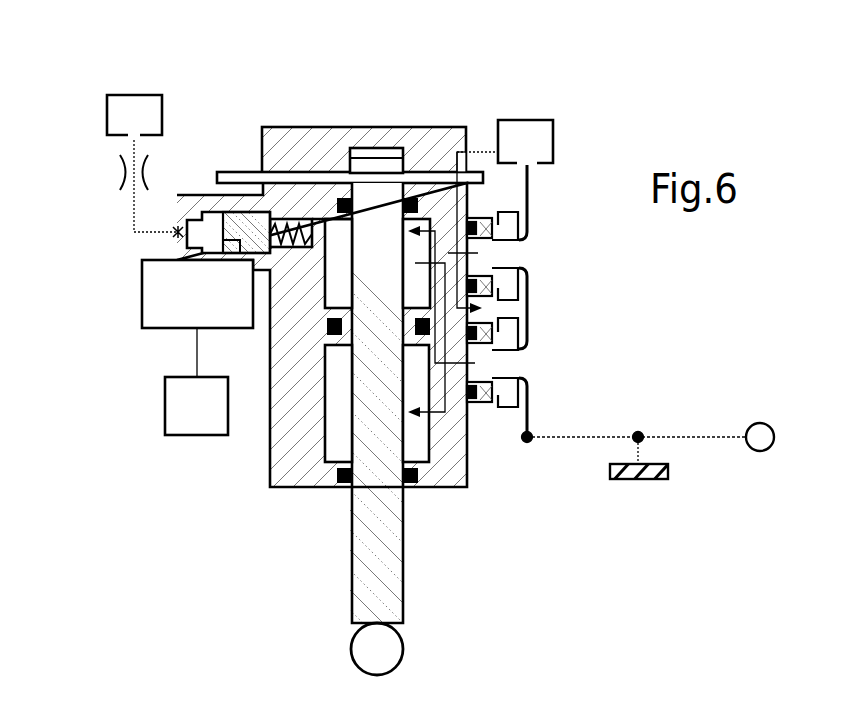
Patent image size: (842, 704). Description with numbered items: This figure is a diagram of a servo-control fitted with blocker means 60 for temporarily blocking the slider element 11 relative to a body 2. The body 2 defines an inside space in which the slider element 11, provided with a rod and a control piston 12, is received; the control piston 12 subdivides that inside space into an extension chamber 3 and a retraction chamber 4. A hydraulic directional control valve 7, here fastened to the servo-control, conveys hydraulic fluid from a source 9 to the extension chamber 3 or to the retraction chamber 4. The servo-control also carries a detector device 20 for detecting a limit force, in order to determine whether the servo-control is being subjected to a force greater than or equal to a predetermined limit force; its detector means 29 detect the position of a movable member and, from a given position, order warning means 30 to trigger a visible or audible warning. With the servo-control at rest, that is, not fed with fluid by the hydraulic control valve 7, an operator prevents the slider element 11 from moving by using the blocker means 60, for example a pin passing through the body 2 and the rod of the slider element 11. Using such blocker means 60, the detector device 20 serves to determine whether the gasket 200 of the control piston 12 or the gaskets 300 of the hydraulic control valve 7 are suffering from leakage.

The body 2 is at (428, 127).
The extension chamber 3 is at (445, 263).
The retraction chamber 4 is at (420, 440).
The hydraulic directional control valve 7 is at (492, 432).
The source 9 is at (107, 113).
The slider element 11 is at (339, 514).
The control piston 12 is at (338, 345).
The detector device 20 is at (152, 222).
The detector means 29 is at (142, 287).
The warning means 30 is at (165, 400).
The blocker means 60 is at (308, 160).
The gasket 200 is at (277, 333).
The gaskets 300 is at (500, 223).